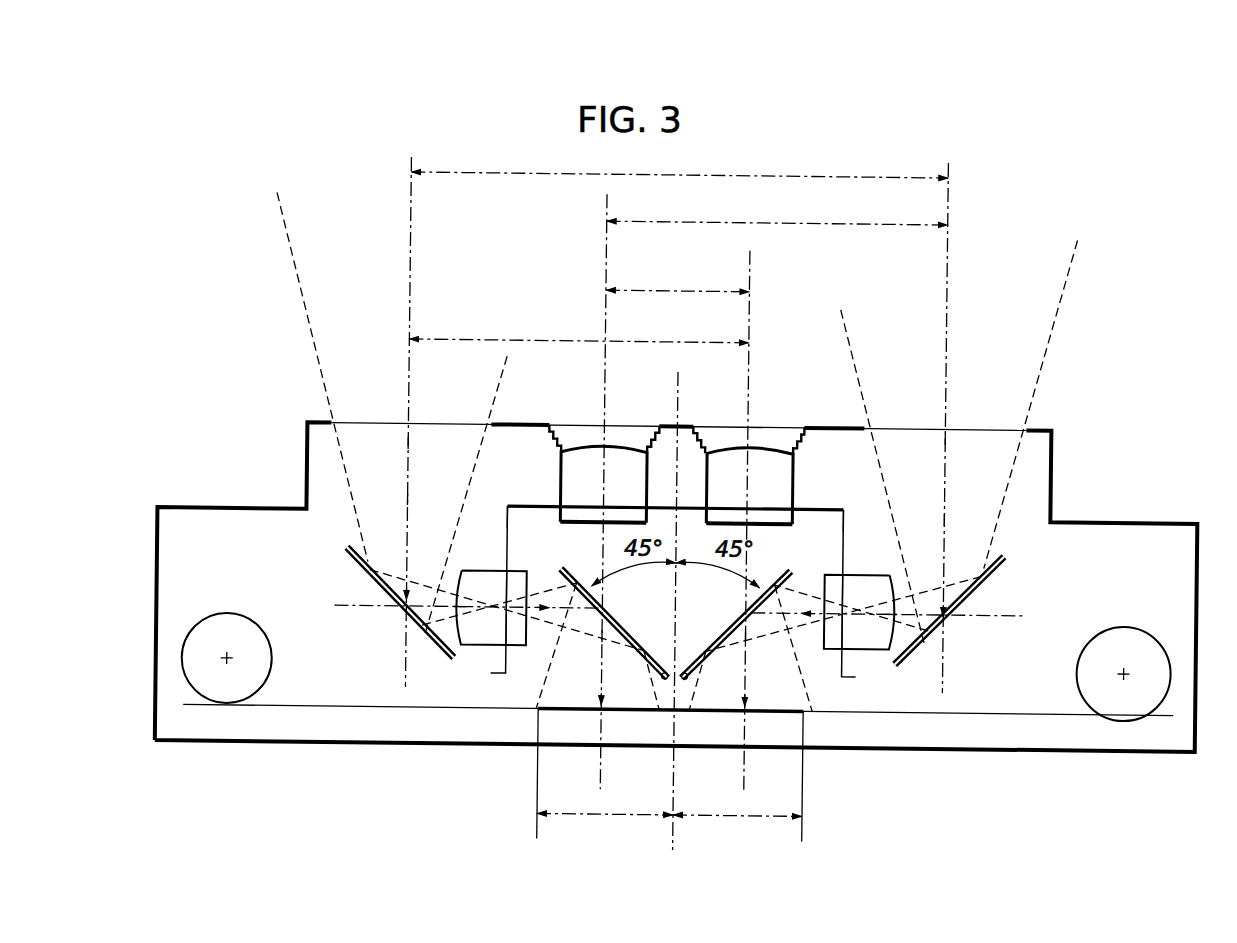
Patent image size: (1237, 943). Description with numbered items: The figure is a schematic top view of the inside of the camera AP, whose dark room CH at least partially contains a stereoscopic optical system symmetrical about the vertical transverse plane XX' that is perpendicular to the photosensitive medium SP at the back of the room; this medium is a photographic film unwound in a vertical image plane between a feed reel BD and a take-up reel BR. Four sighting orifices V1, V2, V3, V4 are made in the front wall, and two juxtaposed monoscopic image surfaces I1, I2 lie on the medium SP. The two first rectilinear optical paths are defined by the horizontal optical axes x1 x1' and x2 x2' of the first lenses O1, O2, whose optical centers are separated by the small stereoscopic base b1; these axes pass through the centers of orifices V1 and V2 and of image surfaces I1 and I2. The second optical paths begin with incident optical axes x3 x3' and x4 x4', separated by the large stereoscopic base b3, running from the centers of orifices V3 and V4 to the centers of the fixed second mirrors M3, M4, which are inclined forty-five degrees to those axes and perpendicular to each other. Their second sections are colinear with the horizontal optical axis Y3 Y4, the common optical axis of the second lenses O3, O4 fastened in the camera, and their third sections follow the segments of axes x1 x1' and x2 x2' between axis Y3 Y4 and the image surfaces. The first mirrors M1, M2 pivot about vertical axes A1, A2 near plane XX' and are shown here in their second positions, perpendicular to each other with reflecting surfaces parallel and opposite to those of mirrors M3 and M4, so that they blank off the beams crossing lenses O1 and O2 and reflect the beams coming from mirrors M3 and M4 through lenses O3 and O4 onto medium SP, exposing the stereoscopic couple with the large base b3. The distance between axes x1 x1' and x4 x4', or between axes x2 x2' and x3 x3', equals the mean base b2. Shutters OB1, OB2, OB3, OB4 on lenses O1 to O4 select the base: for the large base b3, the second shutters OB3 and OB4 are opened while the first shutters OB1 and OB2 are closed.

The camera AP is at (191, 506).
The photosensitive medium SP is at (342, 711).
The dark room CH is at (843, 548).
The take-up reel BR is at (226, 618).
The feed reel BD is at (1126, 622).
The first lens O1 is at (563, 470).
The first lens O2 is at (788, 470).
The second lens O3 is at (488, 649).
The second lens O4 is at (878, 649).
The shutter OB1 is at (564, 530).
The shutter OB2 is at (786, 524).
The shutter OB3 is at (512, 584).
The shutter OB4 is at (832, 650).
The first mirror M1 is at (622, 634).
The first mirror M2 is at (722, 642).
The second mirror M3 is at (344, 552).
The second mirror M4 is at (1008, 560).
The vertical axis A1 is at (662, 680).
The vertical axis A2 is at (690, 680).
The image surface I1 is at (590, 711).
The image surface I2 is at (750, 712).
The sighting orifice V1 is at (562, 424).
The sighting orifice V2 is at (712, 428).
The sighting orifice V3 is at (340, 422).
The sighting orifice V4 is at (984, 432).
The optical axis x1 is at (590, 489).
The optical axis x2 is at (764, 521).
The incident optical axis x3 is at (411, 402).
The incident optical axis x4 is at (962, 424).
The optical axis x1' is at (596, 776).
The optical axis x2' is at (759, 778).
The incident optical axis x3' is at (396, 685).
The incident optical axis x4' is at (956, 691).
The symmetry plane X is at (681, 598).
The symmetry plane X' is at (671, 837).
The optical axis Y3 is at (448, 606).
The optical axis Y4 is at (901, 615).
The small stereoscopic base b1 is at (672, 542).
The mean stereoscopic base b2 is at (678, 270).
The large stereoscopic base b3 is at (679, 161).